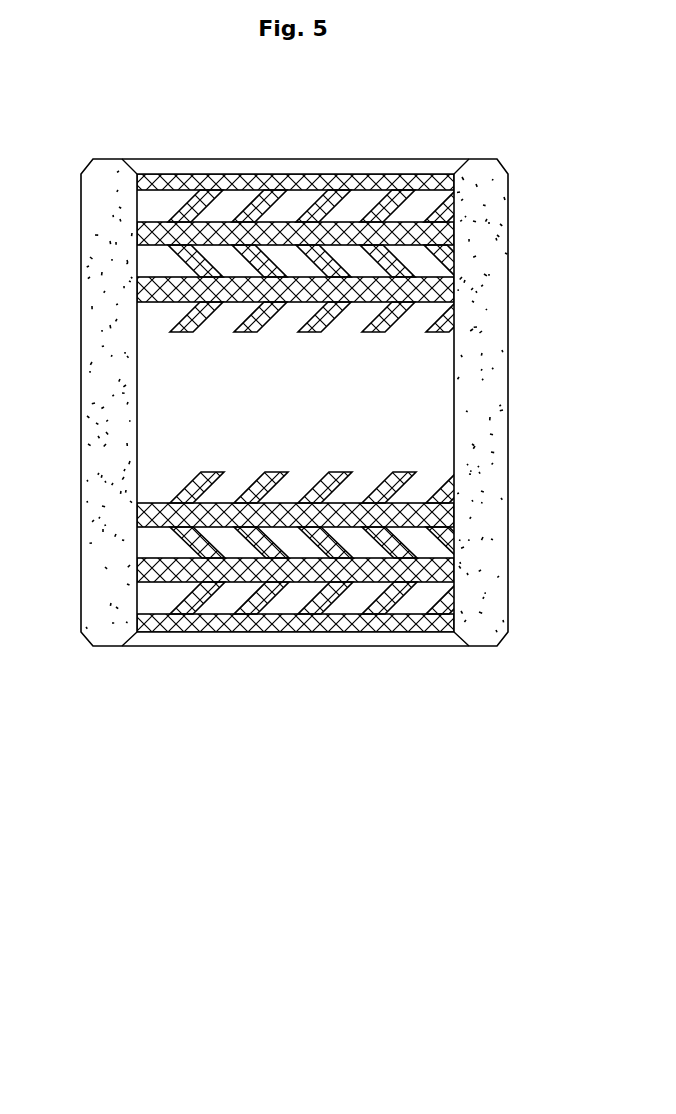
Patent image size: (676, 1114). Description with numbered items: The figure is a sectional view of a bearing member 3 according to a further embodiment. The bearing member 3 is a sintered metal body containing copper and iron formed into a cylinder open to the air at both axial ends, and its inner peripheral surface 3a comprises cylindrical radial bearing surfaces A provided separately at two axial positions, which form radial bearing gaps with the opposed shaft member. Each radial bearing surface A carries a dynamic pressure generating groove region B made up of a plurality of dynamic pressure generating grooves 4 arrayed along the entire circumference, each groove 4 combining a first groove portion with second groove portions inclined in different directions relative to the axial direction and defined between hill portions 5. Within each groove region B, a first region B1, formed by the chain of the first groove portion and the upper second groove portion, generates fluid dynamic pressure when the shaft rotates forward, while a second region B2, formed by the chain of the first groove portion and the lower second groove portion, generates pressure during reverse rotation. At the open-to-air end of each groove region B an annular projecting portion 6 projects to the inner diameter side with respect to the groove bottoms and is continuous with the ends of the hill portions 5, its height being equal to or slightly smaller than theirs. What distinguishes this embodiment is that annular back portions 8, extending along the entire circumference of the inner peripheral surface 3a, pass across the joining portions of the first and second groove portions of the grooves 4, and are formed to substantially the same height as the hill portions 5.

The bearing member 3 is at (516, 160).
The inner peripheral surface 3a is at (357, 488).
The dynamic pressure generating groove 4 is at (355, 207).
The hill portion 5 is at (322, 202).
The annular projecting portion 6 is at (247, 182).
The back portion 8 is at (415, 237).
The radial bearing surface A is at (143, 233).
The dynamic pressure generating groove region B is at (160, 318).
The first region B1 is at (520, 190).
The second region B2 is at (73, 615).